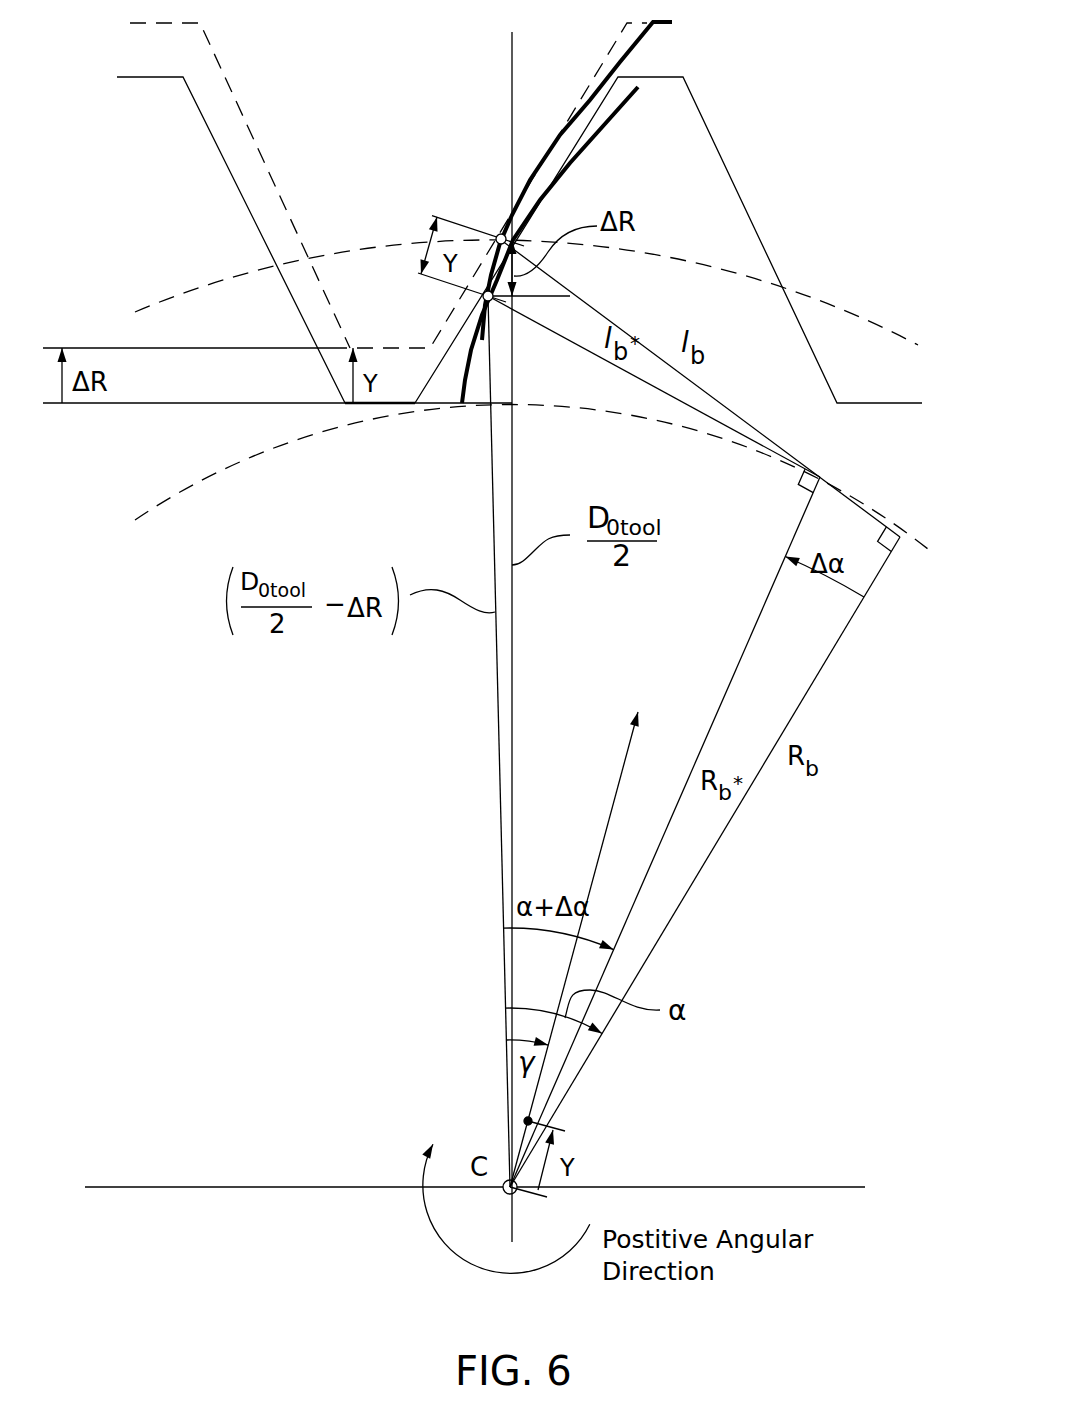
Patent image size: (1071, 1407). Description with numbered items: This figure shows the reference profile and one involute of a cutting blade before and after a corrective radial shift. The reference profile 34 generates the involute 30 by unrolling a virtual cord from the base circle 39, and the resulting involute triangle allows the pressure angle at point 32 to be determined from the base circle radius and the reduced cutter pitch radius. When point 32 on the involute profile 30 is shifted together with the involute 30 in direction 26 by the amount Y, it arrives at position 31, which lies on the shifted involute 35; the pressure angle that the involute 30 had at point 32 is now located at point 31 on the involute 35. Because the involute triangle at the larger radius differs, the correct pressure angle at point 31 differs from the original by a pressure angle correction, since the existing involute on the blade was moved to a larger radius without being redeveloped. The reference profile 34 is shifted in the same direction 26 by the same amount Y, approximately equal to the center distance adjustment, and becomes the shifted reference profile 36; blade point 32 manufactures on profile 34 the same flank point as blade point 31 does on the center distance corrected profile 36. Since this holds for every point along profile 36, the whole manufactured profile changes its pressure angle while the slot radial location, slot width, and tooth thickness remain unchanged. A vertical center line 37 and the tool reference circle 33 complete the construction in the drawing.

The shift direction 26 is at (607, 827).
The involute 30 is at (615, 114).
The point on shifted involute 31 is at (497, 233).
The point on involute profile 32 is at (491, 301).
The tool reference circle (D0tool/2) 33 is at (673, 262).
The reference profile 34 is at (214, 155).
The shifted involute 35 is at (648, 40).
The shifted reference profile 36 is at (205, 47).
The tool center axis line 37 is at (512, 80).
The base circle 39 is at (270, 450).